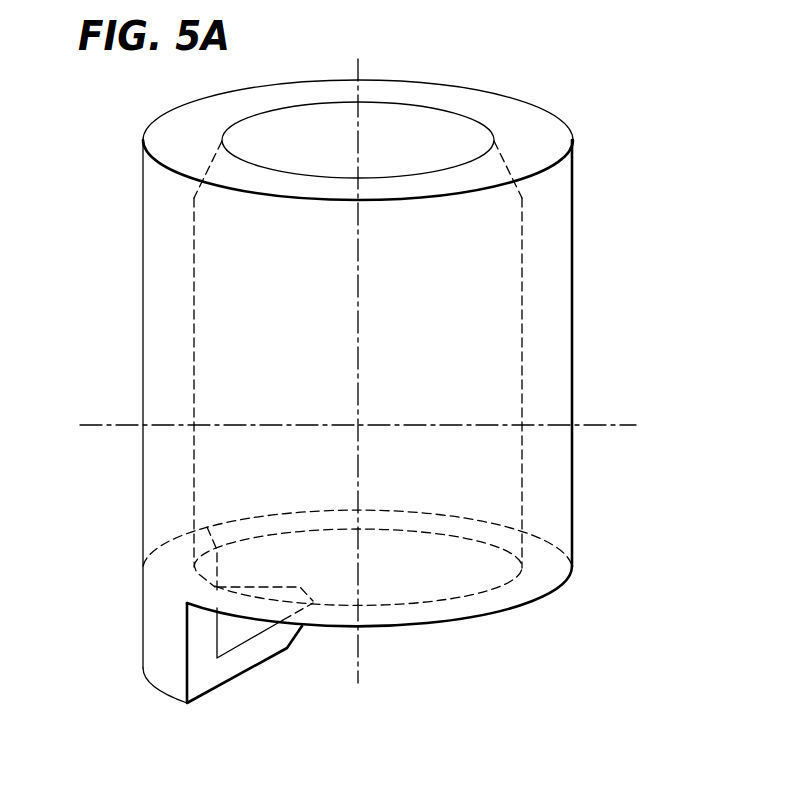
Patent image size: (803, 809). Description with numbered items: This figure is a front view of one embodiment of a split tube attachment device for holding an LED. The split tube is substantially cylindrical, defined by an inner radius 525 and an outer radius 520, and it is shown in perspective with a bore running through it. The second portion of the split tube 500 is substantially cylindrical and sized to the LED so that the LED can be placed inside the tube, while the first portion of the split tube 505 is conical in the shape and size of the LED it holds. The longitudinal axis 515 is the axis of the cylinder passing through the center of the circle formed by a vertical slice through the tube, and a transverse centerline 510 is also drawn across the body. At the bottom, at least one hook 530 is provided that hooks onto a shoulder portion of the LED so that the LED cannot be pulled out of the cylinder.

The second portion of the split tube 500 is at (573, 262).
The first portion of the split tube 505 is at (573, 520).
The central axis 510 is at (618, 423).
The longitudinal axis 515 is at (358, 144).
The outer radius 520 is at (567, 120).
The inner radius 525 is at (458, 111).
The hook 530 is at (143, 618).